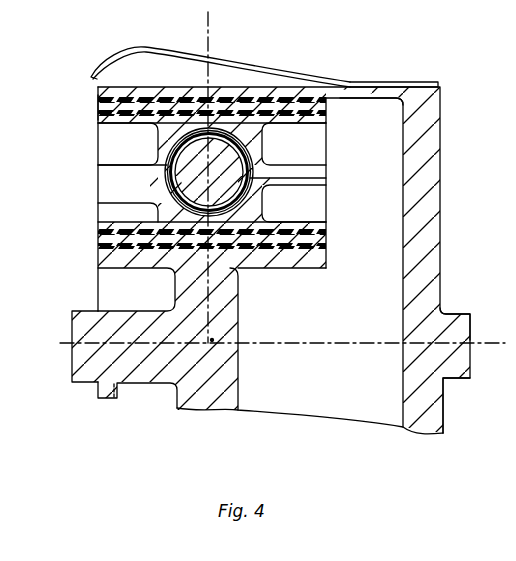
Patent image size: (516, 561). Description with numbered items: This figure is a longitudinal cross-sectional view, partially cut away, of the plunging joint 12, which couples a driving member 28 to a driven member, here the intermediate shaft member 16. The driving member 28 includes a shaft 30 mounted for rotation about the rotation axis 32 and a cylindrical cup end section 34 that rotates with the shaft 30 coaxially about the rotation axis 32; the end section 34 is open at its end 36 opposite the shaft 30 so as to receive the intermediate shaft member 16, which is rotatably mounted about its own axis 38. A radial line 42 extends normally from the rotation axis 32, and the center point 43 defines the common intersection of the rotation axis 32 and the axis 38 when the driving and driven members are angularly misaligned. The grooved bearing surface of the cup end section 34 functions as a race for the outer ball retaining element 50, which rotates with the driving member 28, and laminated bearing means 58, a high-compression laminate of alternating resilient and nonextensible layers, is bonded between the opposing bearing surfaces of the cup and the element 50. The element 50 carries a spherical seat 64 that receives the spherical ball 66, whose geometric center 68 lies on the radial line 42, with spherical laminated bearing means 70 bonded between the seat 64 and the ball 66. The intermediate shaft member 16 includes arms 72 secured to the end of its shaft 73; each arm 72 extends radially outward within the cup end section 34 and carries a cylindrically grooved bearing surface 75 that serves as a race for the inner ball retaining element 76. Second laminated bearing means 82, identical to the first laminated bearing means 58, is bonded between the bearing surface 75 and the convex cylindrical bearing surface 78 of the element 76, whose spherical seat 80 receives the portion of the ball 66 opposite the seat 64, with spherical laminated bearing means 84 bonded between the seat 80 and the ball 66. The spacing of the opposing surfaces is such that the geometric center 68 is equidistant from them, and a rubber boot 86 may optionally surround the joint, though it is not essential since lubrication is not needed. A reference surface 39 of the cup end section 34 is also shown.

The plunging joint 12 is at (441, 94).
The intermediate shaft member 16 is at (112, 399).
The driving member 28 is at (449, 381).
The shaft 30 is at (452, 311).
The rotation axis 32 is at (372, 330).
The cylindrical cup end section 34 is at (356, 83).
The open end 36 is at (97, 108).
The axis 38 is at (157, 342).
The housing inner surface 39 is at (353, 99).
The radial line 42 is at (209, 22).
The center point 43 is at (213, 340).
The outer ball retaining element 50 is at (97, 141).
The laminated bearing means 58 is at (328, 110).
The spherical seat 64 is at (190, 106).
The spherical ball 66 is at (172, 157).
The geometric center 68 is at (209, 172).
The spherical laminated bearing means 70 is at (250, 148).
The arm 72 is at (237, 292).
The shaft 73 is at (88, 311).
The cylindrically grooved bearing surface 75 is at (320, 221).
The inner ball retaining element 76 is at (98, 204).
The convex cylindrical bearing surface 78 is at (324, 268).
The spherical seat 80 is at (250, 198).
The second laminated bearing means 82 is at (326, 239).
The spherical laminated bearing means 84 is at (173, 195).
The rubber boot 86 is at (266, 70).